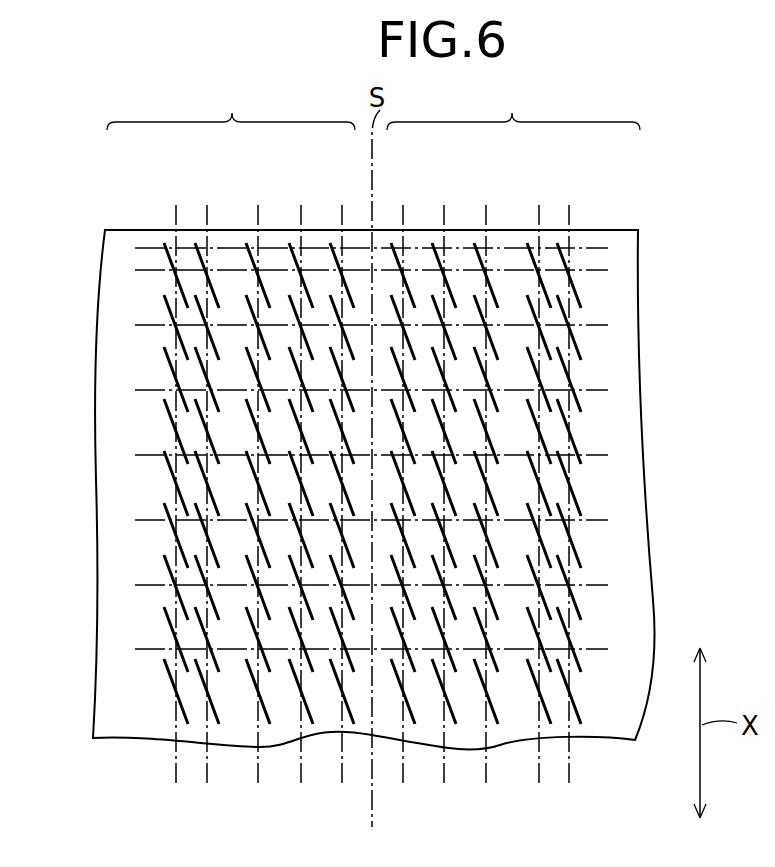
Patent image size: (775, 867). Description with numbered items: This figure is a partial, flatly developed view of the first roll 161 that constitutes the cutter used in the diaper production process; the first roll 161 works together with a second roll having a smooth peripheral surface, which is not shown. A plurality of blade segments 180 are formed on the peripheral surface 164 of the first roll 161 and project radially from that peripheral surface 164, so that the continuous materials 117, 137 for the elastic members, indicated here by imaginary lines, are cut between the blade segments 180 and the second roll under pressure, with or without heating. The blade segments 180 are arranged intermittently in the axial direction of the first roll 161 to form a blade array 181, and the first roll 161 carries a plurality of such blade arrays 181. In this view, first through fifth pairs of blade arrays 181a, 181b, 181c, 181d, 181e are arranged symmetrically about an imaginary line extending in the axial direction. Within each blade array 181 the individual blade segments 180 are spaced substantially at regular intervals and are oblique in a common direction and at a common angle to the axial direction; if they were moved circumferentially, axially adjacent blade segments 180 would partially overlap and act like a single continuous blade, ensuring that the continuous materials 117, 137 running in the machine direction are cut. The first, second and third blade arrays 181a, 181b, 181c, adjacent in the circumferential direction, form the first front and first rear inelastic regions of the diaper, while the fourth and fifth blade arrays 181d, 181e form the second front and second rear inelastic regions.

The first roll 161 is at (396, 434).
The peripheral surface 164 is at (138, 237).
The continuous material 117 is at (595, 248).
The continuous material 137 is at (595, 455).
The blade segments 180 is at (550, 352).
The blade array 181 is at (373, 105).
The first blade array 181a is at (342, 217).
The second blade array 181b is at (301, 217).
The third blade array 181c is at (258, 217).
The fourth blade array 181d is at (206, 217).
The fifth blade array 181e is at (176, 217).